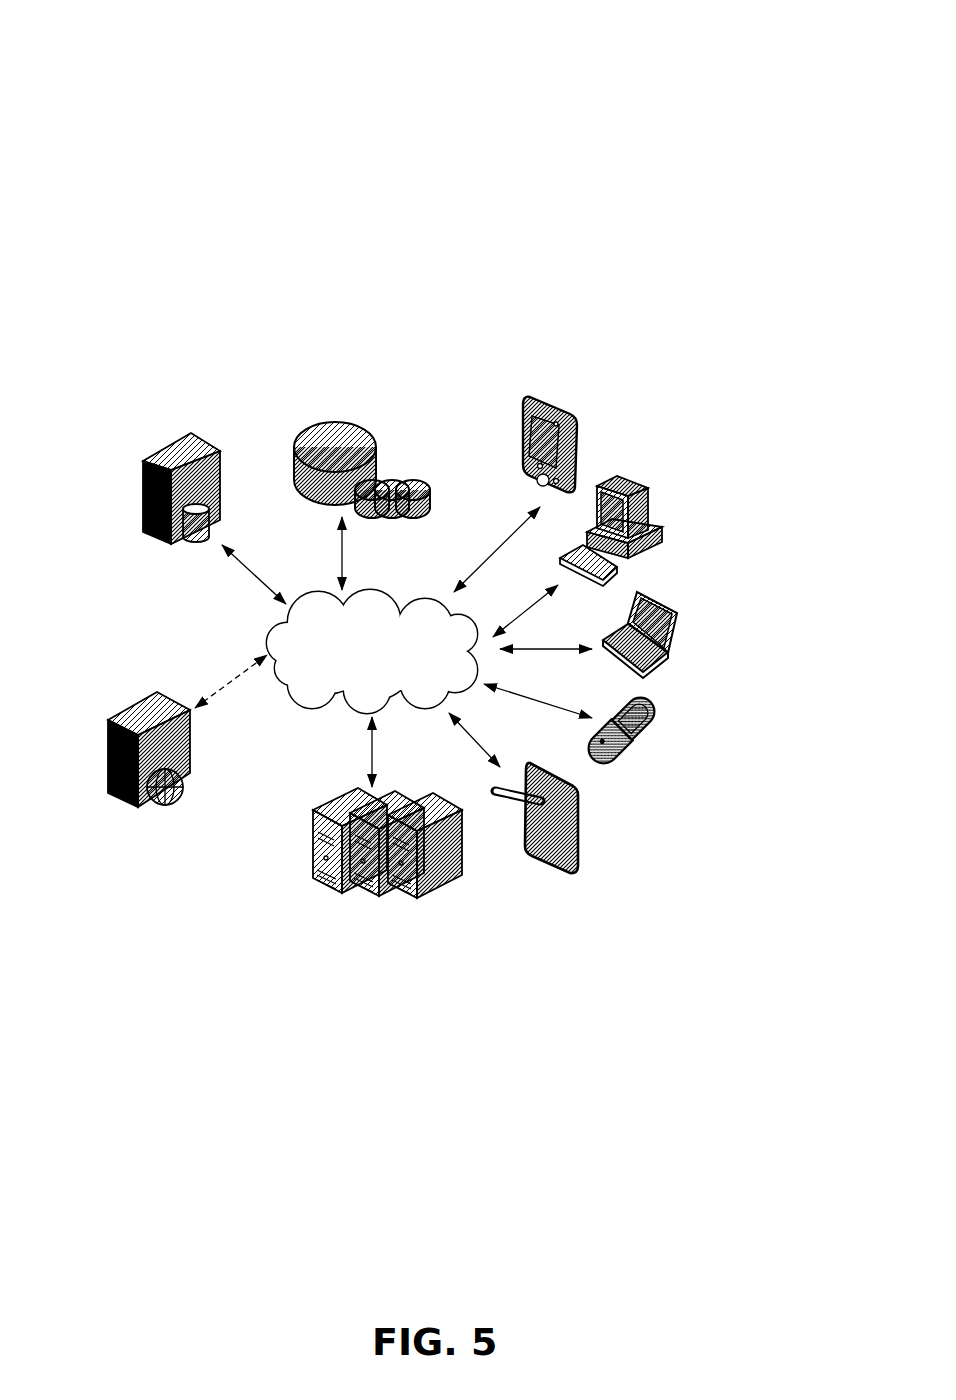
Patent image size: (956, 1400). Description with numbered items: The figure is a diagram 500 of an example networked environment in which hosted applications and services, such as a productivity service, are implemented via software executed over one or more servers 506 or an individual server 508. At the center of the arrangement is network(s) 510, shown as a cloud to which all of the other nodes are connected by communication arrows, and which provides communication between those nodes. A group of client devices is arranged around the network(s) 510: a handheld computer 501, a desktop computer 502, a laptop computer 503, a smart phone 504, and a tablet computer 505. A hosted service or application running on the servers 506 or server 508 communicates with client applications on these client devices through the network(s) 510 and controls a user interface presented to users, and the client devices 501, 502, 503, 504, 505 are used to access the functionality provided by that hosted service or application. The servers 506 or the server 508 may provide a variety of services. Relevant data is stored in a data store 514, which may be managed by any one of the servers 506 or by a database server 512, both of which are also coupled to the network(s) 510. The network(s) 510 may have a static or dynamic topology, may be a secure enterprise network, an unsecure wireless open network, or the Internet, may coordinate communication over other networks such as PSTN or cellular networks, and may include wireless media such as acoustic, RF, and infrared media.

The diagram 500 is at (704, 26).
The handheld computer 501 is at (579, 403).
The desktop computer 502 is at (659, 491).
The laptop computer 503 is at (677, 590).
The smart phone 504 is at (650, 702).
The tablet computer 505 is at (590, 808).
The servers 506 is at (338, 792).
The individual server 508 is at (128, 702).
The network(s) 510 is at (377, 582).
The database server 512 is at (193, 552).
The data store 514 is at (350, 402).